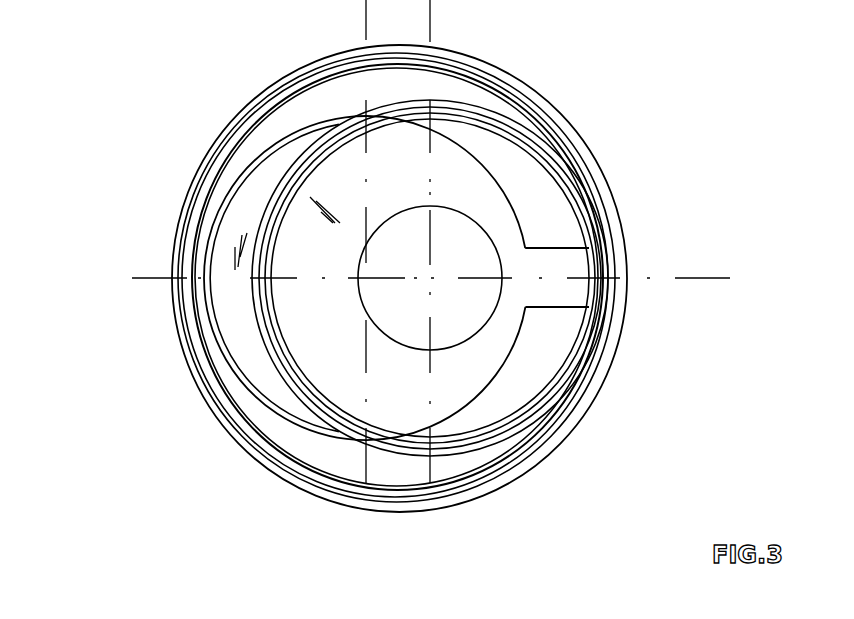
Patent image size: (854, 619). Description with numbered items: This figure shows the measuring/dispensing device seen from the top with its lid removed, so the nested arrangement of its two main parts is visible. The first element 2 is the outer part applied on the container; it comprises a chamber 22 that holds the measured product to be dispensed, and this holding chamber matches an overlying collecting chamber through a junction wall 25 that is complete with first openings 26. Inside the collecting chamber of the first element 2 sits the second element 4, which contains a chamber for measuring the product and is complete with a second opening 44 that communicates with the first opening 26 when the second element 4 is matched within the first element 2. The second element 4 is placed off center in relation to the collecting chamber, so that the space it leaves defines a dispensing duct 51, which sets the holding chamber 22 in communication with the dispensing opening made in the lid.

The first element 2 is at (148, 397).
The second element 4 is at (248, 303).
The chamber 22 is at (462, 257).
The junction wall 25 is at (503, 107).
The first openings 26 is at (563, 238).
The second opening 44 is at (637, 307).
The dispensing duct 51 is at (250, 206).